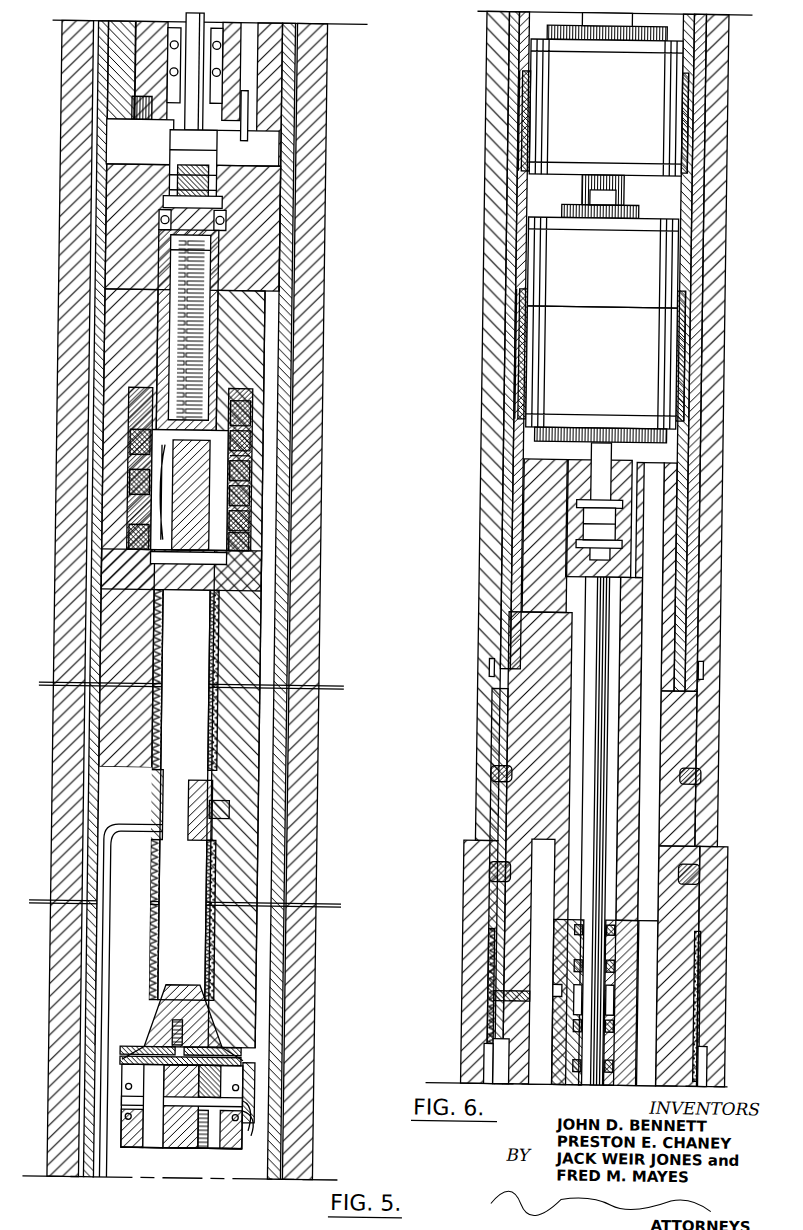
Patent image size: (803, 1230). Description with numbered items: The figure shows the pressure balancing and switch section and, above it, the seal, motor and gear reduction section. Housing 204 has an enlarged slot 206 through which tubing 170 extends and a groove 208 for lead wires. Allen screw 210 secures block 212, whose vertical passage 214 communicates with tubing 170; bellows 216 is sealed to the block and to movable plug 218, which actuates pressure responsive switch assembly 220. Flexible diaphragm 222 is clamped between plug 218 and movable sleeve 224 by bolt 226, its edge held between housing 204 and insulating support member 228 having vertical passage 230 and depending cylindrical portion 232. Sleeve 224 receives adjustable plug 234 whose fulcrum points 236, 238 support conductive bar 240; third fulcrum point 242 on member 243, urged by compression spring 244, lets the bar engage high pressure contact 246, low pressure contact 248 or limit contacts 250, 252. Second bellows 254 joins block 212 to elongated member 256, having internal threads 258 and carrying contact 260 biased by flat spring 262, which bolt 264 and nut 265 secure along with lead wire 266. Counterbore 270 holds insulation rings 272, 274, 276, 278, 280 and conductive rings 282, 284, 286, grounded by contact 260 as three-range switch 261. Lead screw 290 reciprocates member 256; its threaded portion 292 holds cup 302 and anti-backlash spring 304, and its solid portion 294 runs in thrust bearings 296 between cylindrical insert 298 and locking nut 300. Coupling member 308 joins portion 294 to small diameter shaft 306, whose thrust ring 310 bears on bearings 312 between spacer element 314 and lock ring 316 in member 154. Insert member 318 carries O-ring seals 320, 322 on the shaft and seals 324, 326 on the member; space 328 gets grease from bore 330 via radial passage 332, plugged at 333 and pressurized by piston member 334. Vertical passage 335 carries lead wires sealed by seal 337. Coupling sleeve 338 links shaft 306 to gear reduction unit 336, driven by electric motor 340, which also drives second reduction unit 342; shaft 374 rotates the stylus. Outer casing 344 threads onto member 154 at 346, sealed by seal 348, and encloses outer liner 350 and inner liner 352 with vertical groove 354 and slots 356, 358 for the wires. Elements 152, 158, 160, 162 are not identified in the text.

In FIG. 5, the casing 152 is at (66, 716).
In FIG. 6, the casing 152 is at (473, 960).
In FIG. 6, the member 154 is at (566, 772).
In FIG. 6, the seal block 158 is at (505, 896).
In FIG. 5, the tubing 160 is at (93, 655).
In FIG. 6, the tubing 160 is at (504, 1063).
In FIG. 6, the packing 162 is at (504, 1044).
In FIG. 5, the tubing 170 is at (90, 1000).
In FIG. 5, the housing 204 is at (142, 717).
In FIG. 5, the enlarged slot 206 is at (152, 893).
In FIG. 5, the groove 208 is at (271, 889).
In FIG. 5, the Allen screw 210 is at (253, 816).
In FIG. 5, the block 212 is at (156, 850).
In FIG. 5, the vertical passage 214 is at (172, 788).
In FIG. 5, the bellows 216 is at (163, 958).
In FIG. 5, the movable plug 218 is at (178, 998).
In FIG. 5, the pressure responsive switch assembly 220 is at (127, 1120).
In FIG. 5, the flexible diaphragm 222 is at (141, 1047).
In FIG. 5, the movable sleeve 224 is at (136, 1087).
In FIG. 5, the bolt 226 is at (157, 1027).
In FIG. 5, the support member 228 is at (136, 1068).
In FIG. 5, the vertical passage 230 is at (266, 1066).
In FIG. 5, the depending cylindrical portion 232 is at (147, 1140).
In FIG. 5, the adjustable position plug 234 is at (183, 1150).
In FIG. 5, the fulcrum point 236 is at (167, 1147).
In FIG. 5, the fulcrum point 238 is at (190, 1147).
In FIG. 5, the electrically conductive bar 240 is at (250, 1099).
In FIG. 5, the third fulcrum point 242 is at (223, 1090).
In FIG. 5, the member 243 is at (243, 1046).
In FIG. 5, the compression spring 244 is at (250, 1052).
In FIG. 5, the high pressure contact 246 is at (244, 1102).
In FIG. 5, the low pressure contact 248 is at (249, 1117).
In FIG. 5, the high pressure limit contact 250 is at (136, 1100).
In FIG. 5, the low pressure limit contact 252 is at (140, 1123).
In FIG. 5, the second compressible bellows 254 is at (157, 708).
In FIG. 5, the elongated member 256 is at (134, 545).
In FIG. 5, the internal threads 258 is at (146, 305).
In FIG. 5, the electrically conductive contact 260 is at (255, 437).
In FIG. 5, the three-range switch 261 is at (118, 432).
In FIG. 5, the flat spring 262 is at (246, 519).
In FIG. 5, the bolt 264 is at (217, 567).
In FIG. 5, the nut 265 is at (160, 575).
In FIG. 5, the lead wire 266 is at (164, 505).
In FIG. 5, the counterbore 270 is at (133, 455).
In FIG. 5, the annular insulation ring 272 is at (248, 416).
In FIG. 5, the annular insulation ring 274 is at (248, 446).
In FIG. 5, the annular insulation ring 276 is at (242, 492).
In FIG. 5, the annular insulation ring 278 is at (133, 480).
In FIG. 5, the annular insulation ring 280 is at (246, 537).
In FIG. 5, the conductive ring 282 is at (240, 399).
In FIG. 5, the conductive ring 284 is at (241, 469).
In FIG. 5, the conductive ring 286 is at (179, 522).
In FIG. 5, the lead screw 290 is at (156, 258).
In FIG. 5, the externally threaded cylindrical portion 292 is at (164, 285).
In FIG. 5, the upper solid portion 294 is at (165, 195).
In FIG. 5, the thrust bearings 296 is at (160, 220).
In FIG. 5, the cylindrical insert 298 is at (242, 227).
In FIG. 5, the locking nut 300 is at (245, 189).
In FIG. 5, the elongated cup 302 is at (162, 408).
In FIG. 5, the spring 304 is at (167, 340).
In FIG. 5, the small diameter shaft 306 is at (186, 30).
In FIG. 6, the small diameter shaft 306 is at (607, 827).
In FIG. 5, the coupling member 308 is at (167, 160).
In FIG. 5, the thrust ring 310 is at (167, 123).
In FIG. 5, the bearings 312 is at (162, 52).
In FIG. 5, the spacer element 314 is at (166, 31).
In FIG. 6, the spacer element 314 is at (587, 1080).
In FIG. 5, the lock ring 316 is at (160, 92).
In FIG. 6, the insert member 318 is at (626, 1005).
In FIG. 6, the O-ring seal 320 is at (625, 932).
In FIG. 6, the O-ring seal 322 is at (637, 1065).
In FIG. 6, the seal 324 is at (629, 968).
In FIG. 6, the seal 326 is at (630, 1028).
In FIG. 6, the enlarged internal surface 328 is at (583, 967).
In FIG. 5, the vertical bore 330 is at (136, 26).
In FIG. 6, the vertical bore 330 is at (537, 844).
In FIG. 6, the radial passage 332 is at (569, 988).
In FIG. 6, the plug 333 is at (506, 996).
In FIG. 5, the small piston member 334 is at (134, 108).
In FIG. 5, the vertical passage 335 is at (246, 25).
In FIG. 6, the vertical passage 335 is at (661, 646).
In FIG. 6, the gear reduction unit 336 is at (630, 359).
In FIG. 5, the seal 337 is at (247, 114).
In FIG. 6, the coupling sleeve 338 is at (577, 535).
In FIG. 6, the electric motor 340 is at (629, 272).
In FIG. 6, the second gear reduction unit 342 is at (626, 91).
In FIG. 6, the outer casing 344 is at (489, 334).
In FIG. 6, the threaded engagement 346 is at (497, 694).
In FIG. 6, the seal 348 is at (500, 751).
In FIG. 6, the outer liner 350 is at (505, 208).
In FIG. 6, the inner liner 352 is at (521, 141).
In FIG. 6, the vertical groove 354 is at (684, 106).
In FIG. 6, the first slot 356 is at (682, 202).
In FIG. 6, the second slot 358 is at (681, 435).
In FIG. 6, the shaft 374 is at (583, 20).